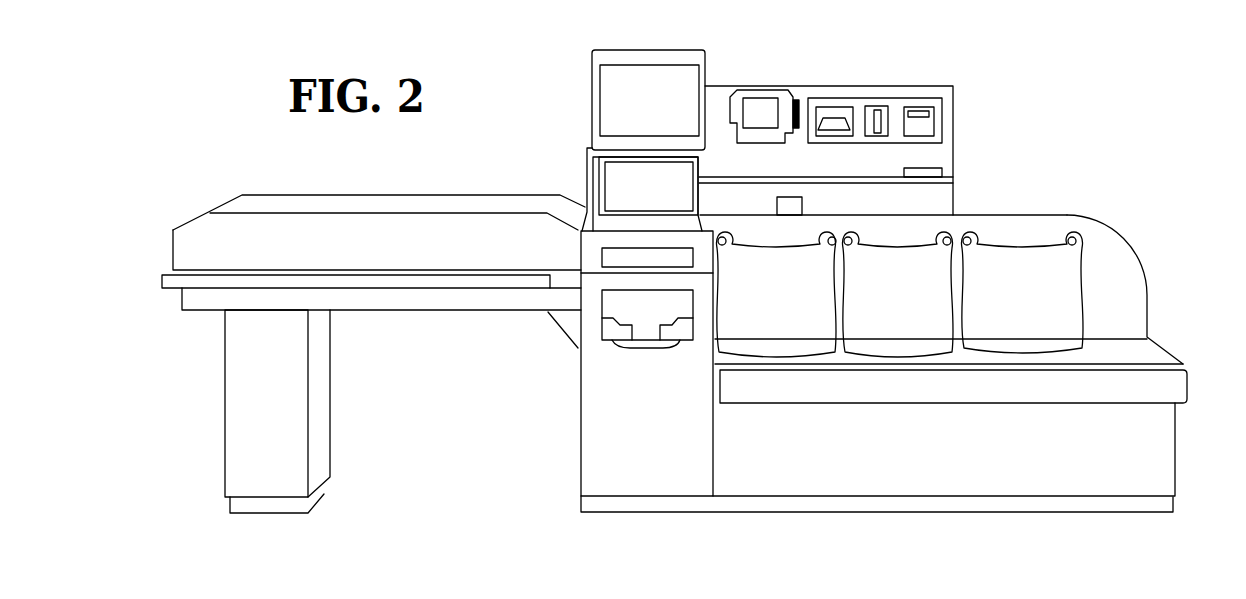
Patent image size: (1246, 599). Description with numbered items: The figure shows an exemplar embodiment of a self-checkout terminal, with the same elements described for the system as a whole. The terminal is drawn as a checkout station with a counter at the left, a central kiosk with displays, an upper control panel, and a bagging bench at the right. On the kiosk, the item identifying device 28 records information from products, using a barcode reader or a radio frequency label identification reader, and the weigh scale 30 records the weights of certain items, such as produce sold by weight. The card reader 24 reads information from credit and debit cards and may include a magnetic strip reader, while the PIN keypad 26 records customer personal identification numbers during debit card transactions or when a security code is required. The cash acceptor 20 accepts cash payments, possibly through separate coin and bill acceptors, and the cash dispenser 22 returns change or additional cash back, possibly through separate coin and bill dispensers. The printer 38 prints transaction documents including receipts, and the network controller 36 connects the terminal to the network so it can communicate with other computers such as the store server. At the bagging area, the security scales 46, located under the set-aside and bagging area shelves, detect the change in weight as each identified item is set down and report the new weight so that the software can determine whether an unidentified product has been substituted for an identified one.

The cash acceptor 20 is at (882, 106).
The cash dispenser 22 is at (617, 345).
The card reader 24 is at (750, 90).
The PIN keypad 26 is at (778, 89).
The item identifying device 28 is at (627, 177).
The weigh scale 30 is at (628, 223).
The network controller 36 is at (842, 107).
The printer 38 is at (933, 168).
The security scales 46 is at (1163, 348).